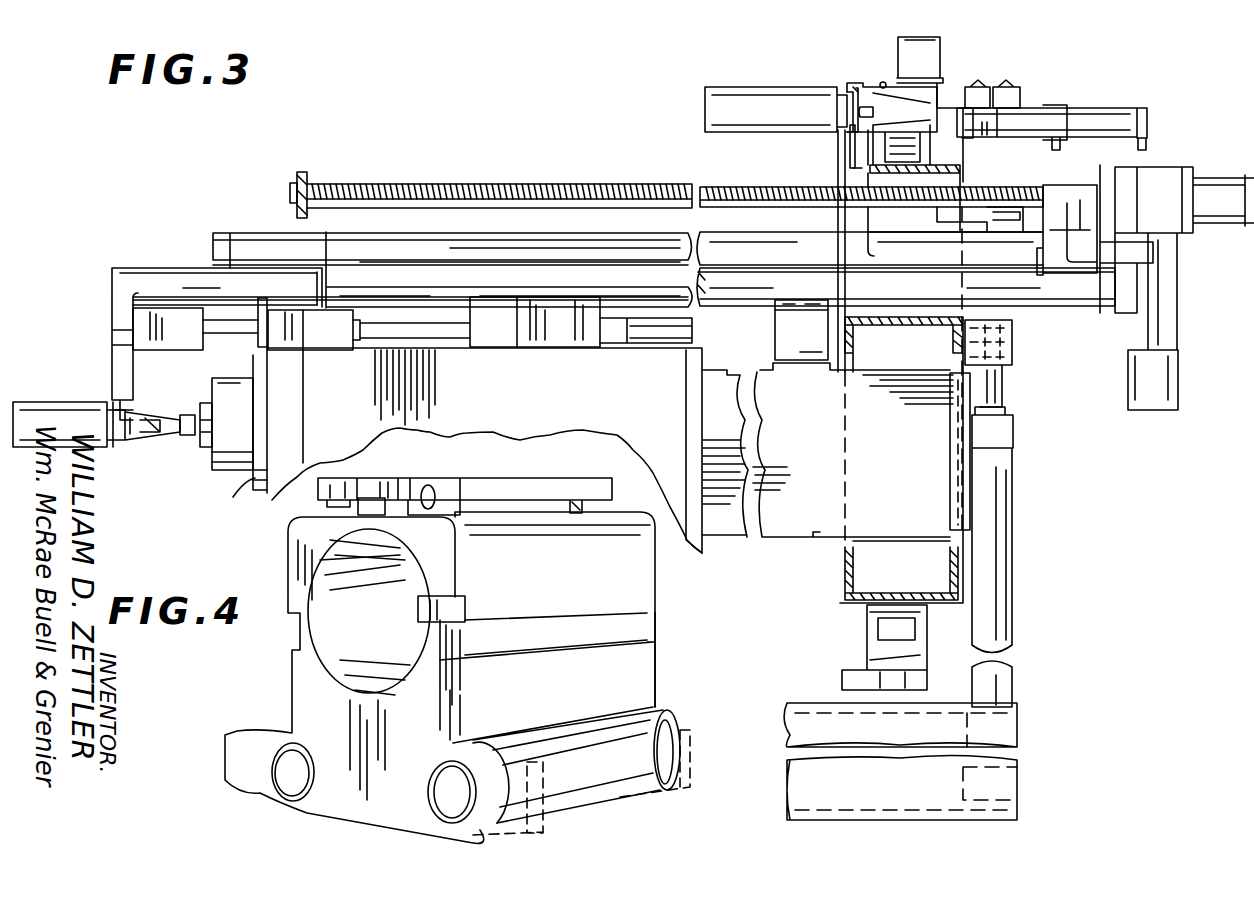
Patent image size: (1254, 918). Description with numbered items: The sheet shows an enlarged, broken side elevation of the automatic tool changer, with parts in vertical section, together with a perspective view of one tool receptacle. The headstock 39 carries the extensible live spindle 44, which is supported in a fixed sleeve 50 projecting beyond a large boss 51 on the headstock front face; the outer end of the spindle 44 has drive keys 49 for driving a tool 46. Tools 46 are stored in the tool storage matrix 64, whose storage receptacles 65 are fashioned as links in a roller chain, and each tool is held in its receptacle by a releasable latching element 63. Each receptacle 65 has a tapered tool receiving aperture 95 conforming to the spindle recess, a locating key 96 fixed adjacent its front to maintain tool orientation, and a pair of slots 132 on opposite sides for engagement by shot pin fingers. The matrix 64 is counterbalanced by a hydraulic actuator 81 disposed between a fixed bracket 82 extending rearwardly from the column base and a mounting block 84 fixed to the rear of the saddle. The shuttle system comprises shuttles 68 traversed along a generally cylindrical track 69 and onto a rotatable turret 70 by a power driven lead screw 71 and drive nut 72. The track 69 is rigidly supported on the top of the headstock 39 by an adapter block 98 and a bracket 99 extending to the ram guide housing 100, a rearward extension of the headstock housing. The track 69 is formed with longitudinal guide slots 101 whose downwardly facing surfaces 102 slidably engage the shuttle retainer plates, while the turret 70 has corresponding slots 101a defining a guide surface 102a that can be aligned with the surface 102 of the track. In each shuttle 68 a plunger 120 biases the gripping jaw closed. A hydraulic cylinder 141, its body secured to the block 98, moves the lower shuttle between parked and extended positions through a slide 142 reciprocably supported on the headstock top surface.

In FIG. 3, the headstock 39 is at (425, 427).
In FIG. 3, the spindle 44 is at (200, 445).
In FIG. 3, the tool 46 is at (62, 383).
In FIG. 3, the drive keys 49 is at (205, 405).
In FIG. 3, the fixed sleeve 50 is at (212, 470).
In FIG. 3, the boss 51 is at (255, 488).
In FIG. 3, the latching element 63 is at (860, 82).
In FIG. 4, the latching element 63 is at (320, 500).
In FIG. 3, the tool storage matrix 64 is at (835, 630).
In FIG. 3, the storage receptacle 65 is at (946, 98).
In FIG. 4, the storage receptacle 65 is at (278, 690).
In FIG. 3, the shuttle 68 is at (100, 313).
In FIG. 3, the track 69 is at (470, 228).
In FIG. 3, the turret 70 is at (232, 232).
In FIG. 3, the lead screw 71 is at (366, 185).
In FIG. 3, the drive nut 72 is at (1067, 195).
In FIG. 3, the hydraulic actuator 81 is at (1005, 495).
In FIG. 3, the fixed bracket 82 is at (1020, 760).
In FIG. 3, the mounting block 84 is at (1005, 345).
In FIG. 4, the tool receiving aperture 95 is at (390, 568).
In FIG. 4, the locating key 96 is at (462, 600).
In FIG. 3, the adapter block 98 is at (530, 344).
In FIG. 3, the bracket 99 is at (790, 355).
In FIG. 3, the ram guide housing 100 is at (802, 525).
In FIG. 3, the guide slots 101 is at (548, 268).
In FIG. 3, the slots 101a is at (215, 266).
In FIG. 3, the downwardly facing surfaces 102 is at (628, 270).
In FIG. 3, the guide surface 102a is at (235, 266).
In FIG. 3, the plunger 120 is at (222, 330).
In FIG. 4, the slots 132 is at (655, 618).
In FIG. 3, the hydraulic cylinder 141 is at (638, 343).
In FIG. 3, the slide 142 is at (333, 340).